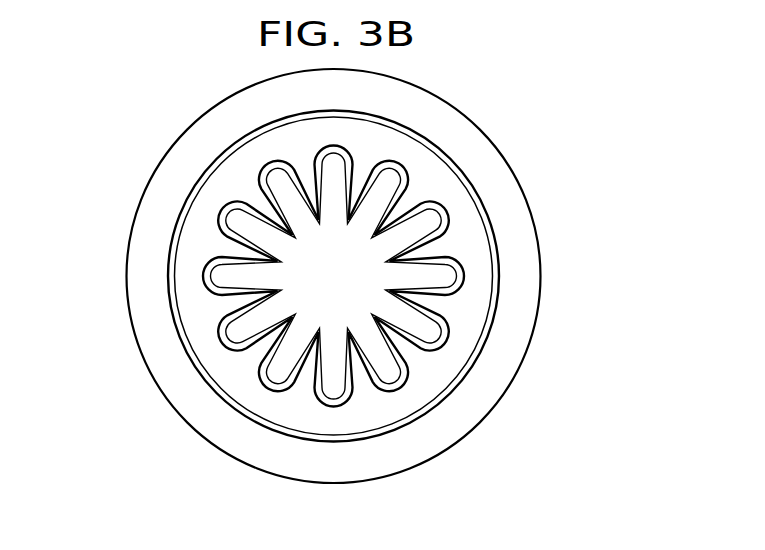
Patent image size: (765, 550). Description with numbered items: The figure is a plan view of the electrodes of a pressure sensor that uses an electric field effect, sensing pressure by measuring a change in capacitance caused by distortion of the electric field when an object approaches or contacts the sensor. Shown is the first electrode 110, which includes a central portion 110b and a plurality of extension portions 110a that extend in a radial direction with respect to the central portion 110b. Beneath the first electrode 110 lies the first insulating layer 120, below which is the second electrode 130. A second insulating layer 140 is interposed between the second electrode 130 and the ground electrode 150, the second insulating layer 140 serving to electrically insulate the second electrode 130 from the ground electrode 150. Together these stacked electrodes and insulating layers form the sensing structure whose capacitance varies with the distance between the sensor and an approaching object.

The first electrode 110 is at (450, 276).
The extension portions 110a is at (438, 213).
The central portion 110b is at (350, 249).
The first insulating layer 120 is at (246, 242).
The second electrode 130 is at (477, 280).
The second insulating layer 140 is at (174, 298).
The ground electrode 150 is at (516, 317).